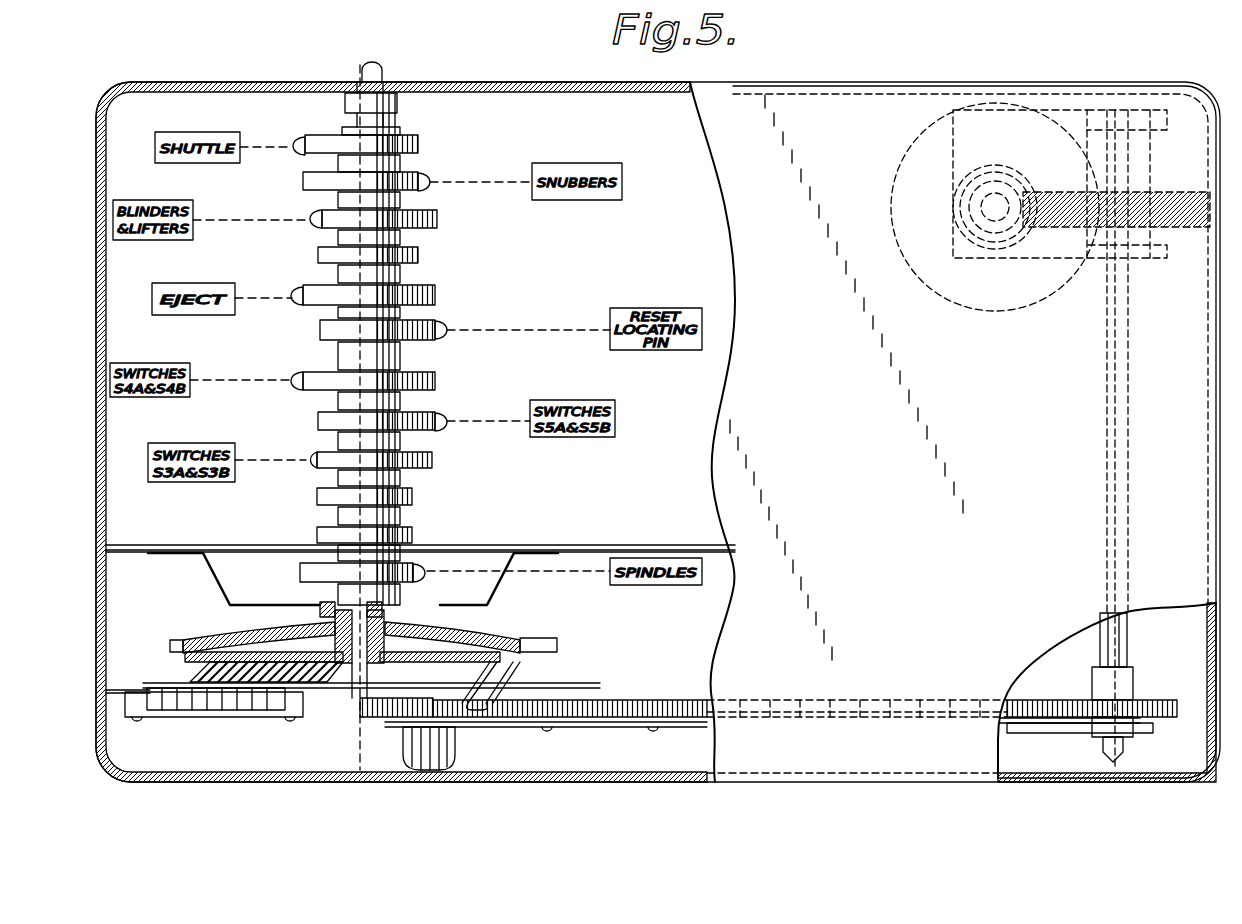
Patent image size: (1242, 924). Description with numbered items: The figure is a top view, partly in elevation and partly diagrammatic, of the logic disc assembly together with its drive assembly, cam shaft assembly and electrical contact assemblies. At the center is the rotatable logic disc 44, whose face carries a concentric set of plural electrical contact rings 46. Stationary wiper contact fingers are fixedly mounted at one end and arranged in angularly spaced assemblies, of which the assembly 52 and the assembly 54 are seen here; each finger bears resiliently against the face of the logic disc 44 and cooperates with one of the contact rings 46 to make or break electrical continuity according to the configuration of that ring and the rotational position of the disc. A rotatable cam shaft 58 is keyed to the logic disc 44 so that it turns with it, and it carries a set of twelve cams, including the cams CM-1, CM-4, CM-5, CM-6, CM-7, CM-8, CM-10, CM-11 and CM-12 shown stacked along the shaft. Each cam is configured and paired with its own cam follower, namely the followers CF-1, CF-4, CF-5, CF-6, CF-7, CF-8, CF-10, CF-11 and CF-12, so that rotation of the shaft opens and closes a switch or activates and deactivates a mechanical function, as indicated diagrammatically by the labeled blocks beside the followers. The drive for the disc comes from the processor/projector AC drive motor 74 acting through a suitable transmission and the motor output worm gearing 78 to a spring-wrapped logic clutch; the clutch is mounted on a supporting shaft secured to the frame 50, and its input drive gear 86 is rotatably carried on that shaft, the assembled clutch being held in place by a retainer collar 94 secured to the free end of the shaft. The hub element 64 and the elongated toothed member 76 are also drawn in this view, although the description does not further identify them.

The cam CM-12 is at (418, 147).
The cam follower CF-12 is at (296, 137).
The cam CM-11 is at (303, 183).
The cam follower CF-11 is at (430, 181).
The cam CM-10 is at (437, 218).
The cam follower CF-10 is at (310, 222).
The cam CM-8 is at (435, 295).
The cam follower CF-8 is at (296, 289).
The cam CM-7 is at (320, 330).
The cam follower CF-7 is at (447, 331).
The cam CM-6 is at (435, 381).
The cam follower CF-6 is at (294, 378).
The cam CM-5 is at (318, 421).
The cam follower CF-5 is at (447, 423).
The cam CM-4 is at (432, 460).
The cam follower CF-4 is at (308, 466).
The cam CM-1 is at (300, 572).
The cam follower CF-1 is at (422, 580).
The cam shaft 58 is at (405, 530).
The frame 50 is at (650, 545).
The logic disc 44 is at (480, 625).
The electrical contact rings 46 is at (215, 640).
The spindle hub 64 is at (557, 648).
The contact finger assembly 52 is at (200, 712).
The input drive gear 86 is at (375, 716).
The retainer collar 94 is at (403, 745).
The contact finger assembly 54 is at (475, 712).
The rack gear 76 is at (695, 718).
The AC drive motor 74 is at (950, 300).
The motor output worm gearing 78 is at (1185, 230).